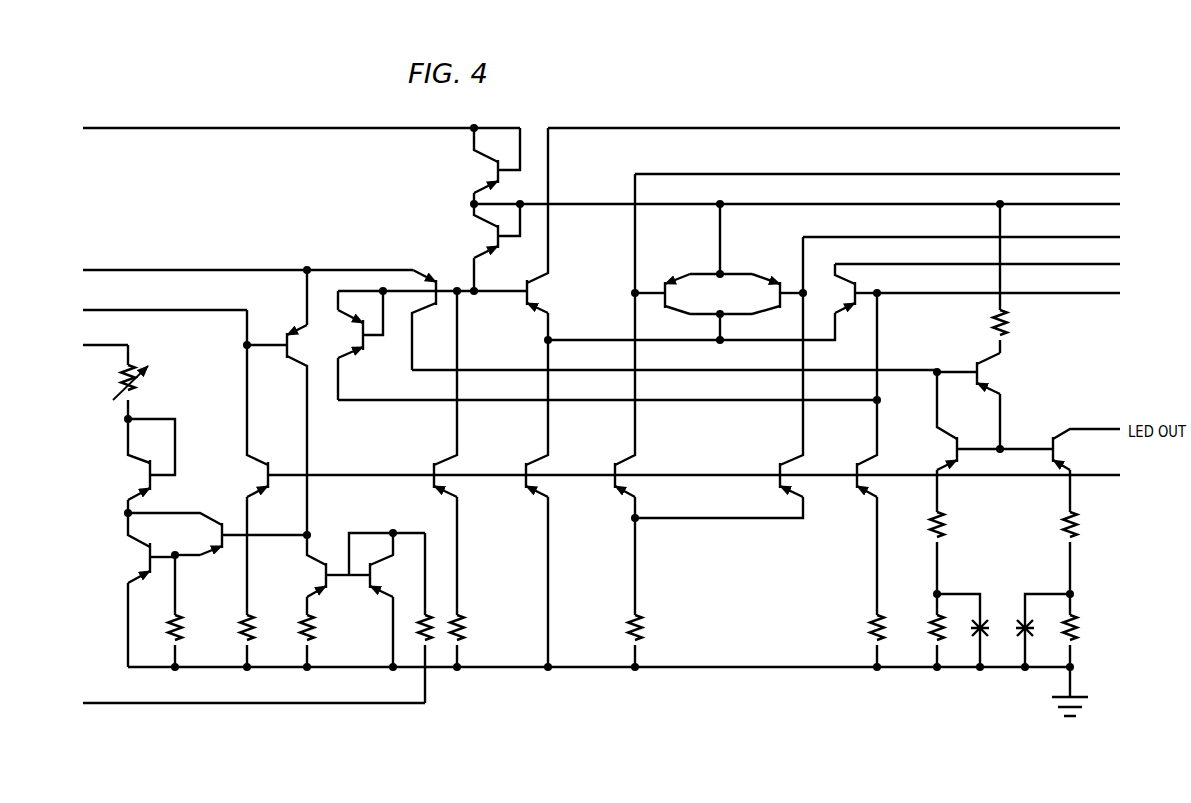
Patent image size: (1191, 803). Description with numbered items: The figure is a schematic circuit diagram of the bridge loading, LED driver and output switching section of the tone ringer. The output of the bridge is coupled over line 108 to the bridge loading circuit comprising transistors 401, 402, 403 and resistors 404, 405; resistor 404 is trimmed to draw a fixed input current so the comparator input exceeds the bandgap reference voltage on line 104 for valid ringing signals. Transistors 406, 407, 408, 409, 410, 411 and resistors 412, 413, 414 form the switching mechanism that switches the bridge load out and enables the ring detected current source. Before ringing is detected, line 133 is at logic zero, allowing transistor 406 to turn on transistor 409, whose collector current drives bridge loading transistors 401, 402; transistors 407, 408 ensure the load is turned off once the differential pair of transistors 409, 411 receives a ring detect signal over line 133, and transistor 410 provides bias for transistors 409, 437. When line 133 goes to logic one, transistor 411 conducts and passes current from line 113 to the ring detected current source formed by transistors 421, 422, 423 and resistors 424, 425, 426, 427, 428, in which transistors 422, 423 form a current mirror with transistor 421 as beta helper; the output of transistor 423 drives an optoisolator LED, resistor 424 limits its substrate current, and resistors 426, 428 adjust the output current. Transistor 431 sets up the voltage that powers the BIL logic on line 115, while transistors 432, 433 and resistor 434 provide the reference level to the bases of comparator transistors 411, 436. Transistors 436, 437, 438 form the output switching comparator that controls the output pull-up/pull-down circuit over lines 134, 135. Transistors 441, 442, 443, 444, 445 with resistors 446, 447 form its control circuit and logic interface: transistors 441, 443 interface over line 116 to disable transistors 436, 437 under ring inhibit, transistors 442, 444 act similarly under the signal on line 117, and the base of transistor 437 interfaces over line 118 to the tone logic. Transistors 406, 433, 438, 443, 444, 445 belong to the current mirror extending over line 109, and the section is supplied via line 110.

The bandgap reference voltage line 104 is at (240, 704).
The bridge output line 108 is at (91, 346).
The current mirror line 109 is at (710, 479).
The supply line 110 is at (287, 128).
The comparator drive current line 113 is at (234, 271).
The BIL logic power line 115 is at (813, 205).
The ring inhibit interface line 116 is at (893, 175).
The ring detect and tone enable line 117 is at (977, 238).
The tone logic line 118 is at (1014, 293).
The ring detect signal line 133 is at (151, 311).
The output switching control line 134 is at (993, 264).
The output switching control line 135 is at (850, 131).
The bridge loading transistor 401 is at (151, 590).
The bridge loading transistor 402 is at (217, 546).
The bridge loading transistor 403 is at (151, 466).
The trimmed resistor 404 is at (144, 382).
The bridge loading resistor 405 is at (190, 611).
The current mirror transistor 406 is at (271, 462).
The switching transistor 407 is at (308, 575).
The switching transistor 408 is at (384, 600).
The differential pair transistor 409 is at (277, 402).
The bias transistor 410 is at (369, 345).
The differential pair transistor 411 is at (432, 320).
The switching resistor 412 is at (262, 641).
The switching resistor 413 is at (322, 641).
The switching resistor 414 is at (436, 627).
The beta helper transistor 421 is at (986, 401).
The current mirror transistor 422 is at (951, 442).
The output transistor 423 is at (1060, 470).
The substrate current limiting resistor 424 is at (1015, 278).
The current source resistor 425 is at (952, 563).
The output current adjusting resistor 426 is at (921, 641).
The current source resistor 427 is at (1086, 563).
The output current adjusting resistor 428 is at (1086, 641).
The BIL logic power transistor 431 is at (487, 176).
The reference level transistor 432 is at (485, 248).
The reference level transistor 433 is at (430, 453).
The reference level resistor 434 is at (472, 641).
The output switching comparator transistor 436 is at (519, 234).
The output switching comparator transistor 437 is at (849, 302).
The output switching comparator transistor 438 is at (522, 503).
The control transistor 441 is at (669, 282).
The control transistor 442 is at (777, 282).
The control transistor 443 is at (611, 394).
The control transistor 444 is at (719, 377).
The control transistor 445 is at (852, 454).
The control circuit resistor 446 is at (650, 641).
The control circuit resistor 447 is at (861, 641).